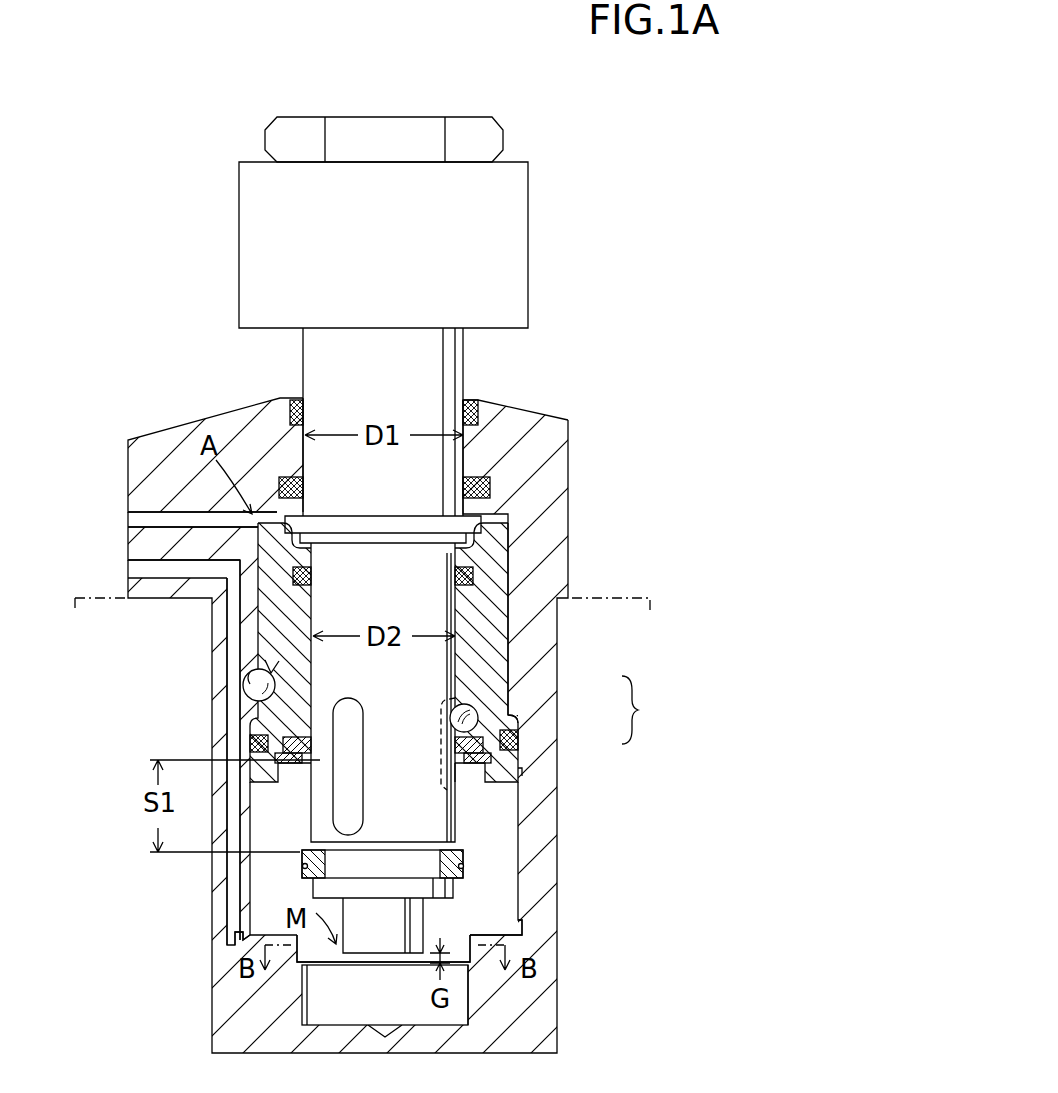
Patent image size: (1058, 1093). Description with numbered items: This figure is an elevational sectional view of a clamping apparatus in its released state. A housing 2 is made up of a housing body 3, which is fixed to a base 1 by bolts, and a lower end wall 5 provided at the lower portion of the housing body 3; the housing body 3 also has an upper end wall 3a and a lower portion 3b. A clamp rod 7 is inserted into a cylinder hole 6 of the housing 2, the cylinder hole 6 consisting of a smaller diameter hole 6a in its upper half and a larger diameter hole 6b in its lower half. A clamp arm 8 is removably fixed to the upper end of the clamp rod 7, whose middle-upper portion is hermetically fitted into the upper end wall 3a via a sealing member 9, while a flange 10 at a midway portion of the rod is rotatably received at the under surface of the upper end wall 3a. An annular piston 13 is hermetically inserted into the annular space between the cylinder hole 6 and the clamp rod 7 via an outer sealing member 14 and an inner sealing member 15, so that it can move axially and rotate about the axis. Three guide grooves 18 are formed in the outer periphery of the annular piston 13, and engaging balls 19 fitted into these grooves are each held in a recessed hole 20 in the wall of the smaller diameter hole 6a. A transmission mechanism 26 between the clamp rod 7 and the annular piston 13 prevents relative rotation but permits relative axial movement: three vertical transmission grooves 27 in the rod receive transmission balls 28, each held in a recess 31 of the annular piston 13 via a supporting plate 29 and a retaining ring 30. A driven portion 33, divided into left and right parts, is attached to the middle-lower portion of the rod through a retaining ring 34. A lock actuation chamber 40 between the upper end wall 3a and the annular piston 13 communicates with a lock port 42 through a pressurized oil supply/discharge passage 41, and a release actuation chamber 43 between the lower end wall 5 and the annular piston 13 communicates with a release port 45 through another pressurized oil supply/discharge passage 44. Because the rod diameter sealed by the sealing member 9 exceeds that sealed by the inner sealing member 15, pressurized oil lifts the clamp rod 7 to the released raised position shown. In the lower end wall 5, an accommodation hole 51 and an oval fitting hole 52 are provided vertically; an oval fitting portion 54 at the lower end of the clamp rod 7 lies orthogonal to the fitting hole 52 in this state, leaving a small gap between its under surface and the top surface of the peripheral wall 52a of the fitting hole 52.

The base 1 is at (645, 592).
The housing 2 is at (597, 493).
The housing body 3 is at (581, 528).
The upper end wall 3a is at (540, 425).
The lower body portion 3b is at (550, 800).
The lower end wall 5 is at (478, 1048).
The cylinder hole 6 is at (640, 710).
The smaller diameter hole 6a is at (512, 710).
The larger diameter hole 6b is at (520, 746).
The clamp rod 7 is at (476, 371).
The clamp arm 8 is at (528, 236).
The sealing member 9 is at (482, 480).
The flange 10 is at (412, 518).
The annular piston 13 is at (534, 777).
The outer sealing member 14 is at (248, 742).
The inner sealing member 15 is at (311, 576).
The guide groove 18 is at (278, 668).
The engaging ball 19 is at (243, 688).
The recessed hole 20 is at (250, 672).
The transmission mechanism 26 is at (474, 776).
The transmission groove 27 is at (440, 775).
The transmission ball 28 is at (455, 705).
The supporting plate 29 is at (453, 745).
The retaining ring 30 is at (473, 797).
The recess 31 is at (492, 680).
The driven portion 33 is at (466, 860).
The retaining ring 34 is at (462, 870).
The lock actuation chamber 40 is at (272, 523).
The pressurized oil supply/discharge passage 41 is at (173, 522).
The lock port 42 is at (130, 515).
The release actuation chamber 43 is at (262, 903).
The pressurized oil supply/discharge passage 44 is at (232, 878).
The release port 45 is at (130, 570).
The accommodation hole 51 is at (468, 960).
The fitting hole 52 is at (463, 1010).
The peripheral wall 52a is at (473, 990).
The fitting portion 54 is at (378, 950).